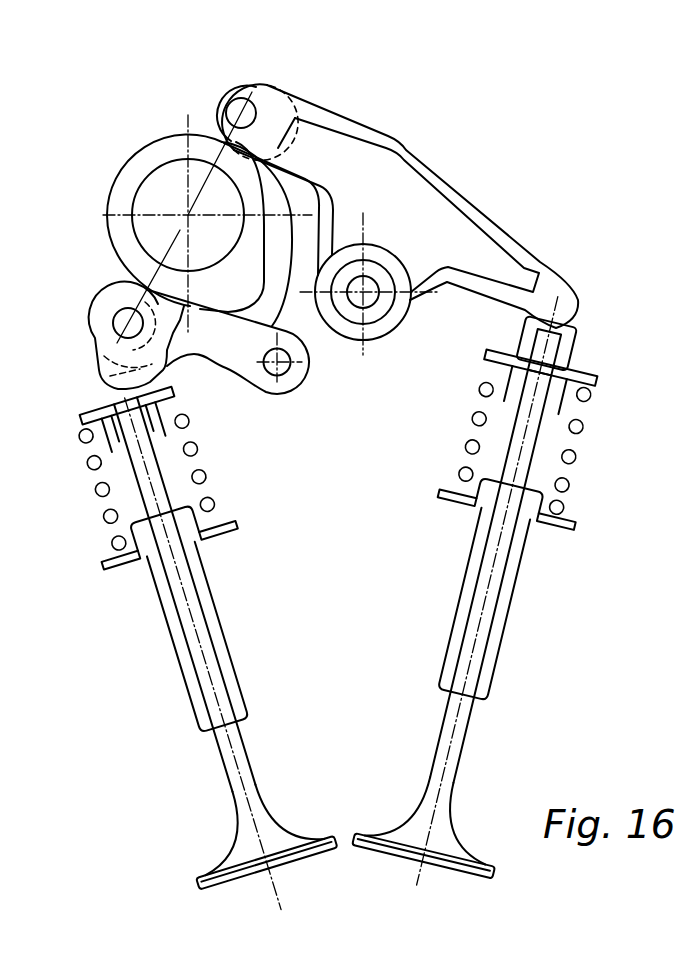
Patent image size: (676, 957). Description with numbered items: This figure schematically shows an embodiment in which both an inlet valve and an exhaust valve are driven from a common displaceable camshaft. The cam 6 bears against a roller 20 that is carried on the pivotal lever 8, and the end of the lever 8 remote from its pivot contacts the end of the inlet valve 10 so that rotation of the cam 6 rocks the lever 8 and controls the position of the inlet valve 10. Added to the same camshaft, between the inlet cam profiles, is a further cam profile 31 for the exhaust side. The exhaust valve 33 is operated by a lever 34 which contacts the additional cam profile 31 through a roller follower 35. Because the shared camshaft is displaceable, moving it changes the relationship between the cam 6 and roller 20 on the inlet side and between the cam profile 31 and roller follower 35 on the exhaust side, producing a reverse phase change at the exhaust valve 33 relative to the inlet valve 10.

The cam 6 is at (247, 277).
The pivotal lever 8 is at (208, 372).
The inlet valve 10 is at (247, 821).
The roller 20 is at (102, 300).
The cam profile 31 is at (302, 197).
The exhaust valve 33 is at (457, 730).
The lever 34 is at (468, 200).
The roller follower 35 is at (254, 74).